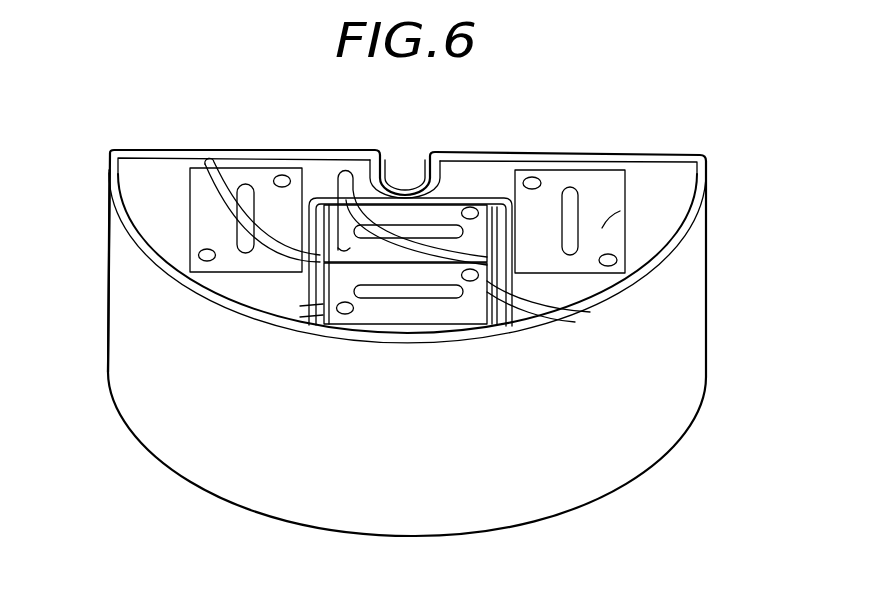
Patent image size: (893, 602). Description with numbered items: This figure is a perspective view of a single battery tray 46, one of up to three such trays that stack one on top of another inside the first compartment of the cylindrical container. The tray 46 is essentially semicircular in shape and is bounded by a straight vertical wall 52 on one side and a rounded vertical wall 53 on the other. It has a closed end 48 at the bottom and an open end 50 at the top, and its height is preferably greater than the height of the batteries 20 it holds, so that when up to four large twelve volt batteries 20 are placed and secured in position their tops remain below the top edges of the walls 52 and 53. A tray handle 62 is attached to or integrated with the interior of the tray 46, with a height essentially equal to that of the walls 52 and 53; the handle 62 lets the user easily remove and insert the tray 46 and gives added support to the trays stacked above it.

The tray 46 is at (654, 476).
The closed end 48 is at (253, 513).
The rounded vertical wall 53 is at (128, 297).
The straight vertical wall 52 is at (503, 173).
The open end 50 is at (613, 172).
The tray handle 62 is at (503, 237).
The batteries 20 is at (602, 228).